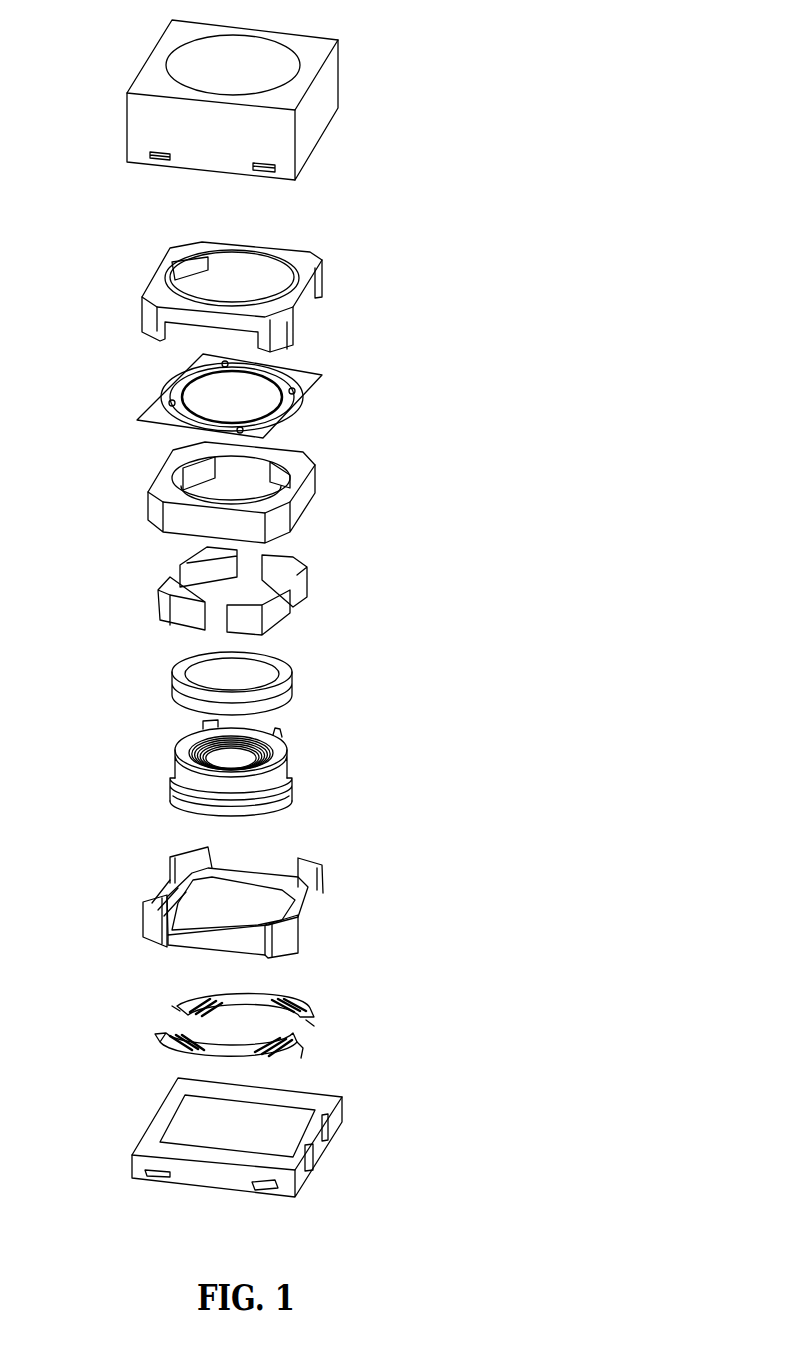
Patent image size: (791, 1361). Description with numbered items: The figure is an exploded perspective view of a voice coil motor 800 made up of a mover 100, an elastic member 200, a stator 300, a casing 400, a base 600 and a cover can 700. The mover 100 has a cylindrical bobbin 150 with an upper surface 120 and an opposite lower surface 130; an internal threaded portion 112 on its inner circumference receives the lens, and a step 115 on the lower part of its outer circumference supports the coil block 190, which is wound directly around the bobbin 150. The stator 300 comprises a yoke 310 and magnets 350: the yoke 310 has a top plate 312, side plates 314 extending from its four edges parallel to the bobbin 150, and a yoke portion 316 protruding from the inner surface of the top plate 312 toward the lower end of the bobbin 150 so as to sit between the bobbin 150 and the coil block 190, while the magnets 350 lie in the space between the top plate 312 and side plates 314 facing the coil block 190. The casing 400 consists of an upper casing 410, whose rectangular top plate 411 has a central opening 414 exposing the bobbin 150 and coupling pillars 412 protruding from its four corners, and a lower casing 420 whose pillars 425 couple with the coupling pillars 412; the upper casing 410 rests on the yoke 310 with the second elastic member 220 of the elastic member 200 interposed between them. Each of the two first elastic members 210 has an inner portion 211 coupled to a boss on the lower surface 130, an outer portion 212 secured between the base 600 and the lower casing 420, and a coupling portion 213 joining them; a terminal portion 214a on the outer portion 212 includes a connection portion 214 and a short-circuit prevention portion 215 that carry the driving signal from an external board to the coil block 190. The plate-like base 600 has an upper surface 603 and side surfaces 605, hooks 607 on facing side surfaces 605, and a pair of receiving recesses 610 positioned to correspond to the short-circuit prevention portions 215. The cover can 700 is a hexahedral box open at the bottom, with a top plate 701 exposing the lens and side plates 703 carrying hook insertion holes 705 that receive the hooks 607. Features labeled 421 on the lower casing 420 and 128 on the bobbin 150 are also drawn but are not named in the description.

The voice coil motor 800 is at (383, 242).
The cover can 700 is at (247, 98).
The top plate 701 is at (155, 80).
The side plates 703 is at (332, 100).
The hook insertion holes 705 is at (152, 153).
The casing 400 is at (260, 572).
The upper casing 410 is at (222, 269).
The top plate 411 is at (187, 247).
The coupling pillars 412 is at (147, 322).
The opening 414 is at (250, 296).
The lower casing 420 is at (275, 902).
The coupling portion of lower cover 421 is at (180, 890).
The pillars 425 is at (283, 930).
The elastic member 200 is at (264, 396).
The second elastic member 220 is at (138, 422).
The stator 300 is at (237, 529).
The yoke 310 is at (204, 483).
The top plate 312 is at (297, 463).
The side plates 314 is at (308, 488).
The yoke portion 316 is at (197, 468).
The magnets 350 is at (158, 602).
The mover 100 is at (287, 743).
The coil block 190 is at (297, 670).
The upper surface 120 is at (239, 746).
The protrusion of bobbin 128 is at (197, 723).
The internal threaded portion 112 is at (180, 757).
The bobbin 150 is at (297, 772).
The lower surface 130 is at (177, 805).
The step 115 is at (260, 800).
The first elastic members 210 is at (260, 1016).
The inner portion 211 is at (212, 1018).
The outer portion 212 is at (182, 1007).
The coupling portion 213 is at (177, 1013).
The connection portion 214 is at (302, 1042).
The terminal portion 214a is at (388, 1015).
The short-circuit prevention portion 215 is at (307, 1043).
The base 600 is at (266, 1164).
The upper surface 603 is at (158, 1125).
The side surfaces 605 is at (298, 1170).
The hooks 607 is at (160, 1175).
The receiving recesses 610 is at (323, 1140).